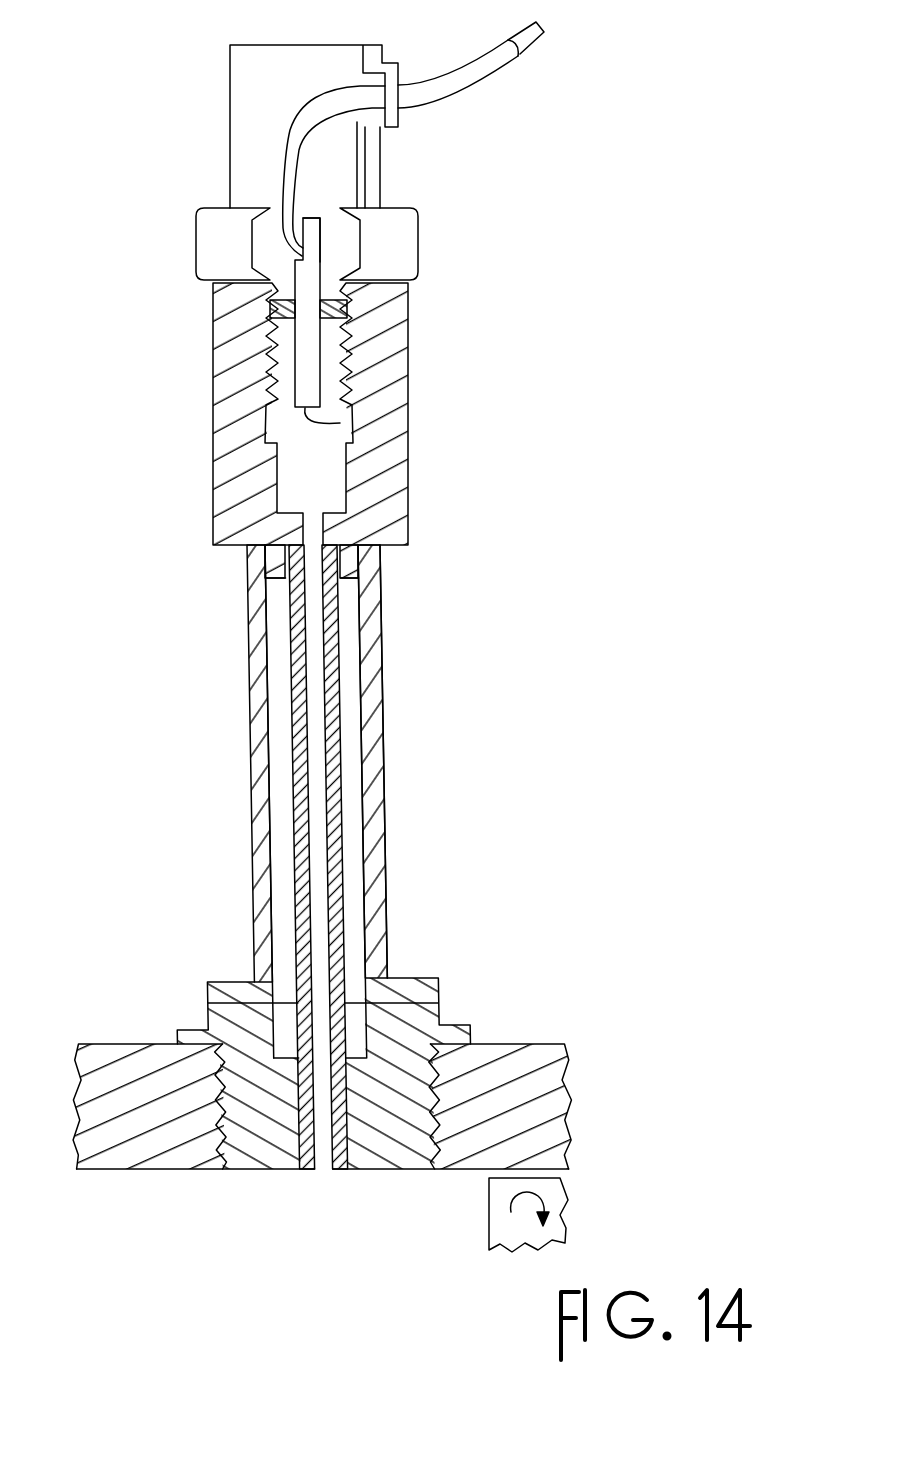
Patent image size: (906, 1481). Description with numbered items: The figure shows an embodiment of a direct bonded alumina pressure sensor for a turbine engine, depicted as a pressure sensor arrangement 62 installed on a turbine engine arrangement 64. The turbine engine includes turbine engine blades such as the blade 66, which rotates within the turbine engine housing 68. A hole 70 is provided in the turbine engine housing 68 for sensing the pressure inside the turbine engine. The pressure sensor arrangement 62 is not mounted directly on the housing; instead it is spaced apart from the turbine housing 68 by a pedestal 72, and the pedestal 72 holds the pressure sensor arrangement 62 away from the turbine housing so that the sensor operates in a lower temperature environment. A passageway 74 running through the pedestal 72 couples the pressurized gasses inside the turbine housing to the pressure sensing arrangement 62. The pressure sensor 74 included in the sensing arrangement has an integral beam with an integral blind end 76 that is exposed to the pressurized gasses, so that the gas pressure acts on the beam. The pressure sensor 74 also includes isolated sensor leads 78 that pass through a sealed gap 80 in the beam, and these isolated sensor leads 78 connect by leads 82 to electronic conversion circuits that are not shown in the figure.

The pressure sensor arrangement 62 is at (214, 179).
The turbine engine arrangement 64 is at (633, 222).
The blade 66 is at (570, 1207).
The turbine engine housing 68 is at (90, 1044).
The hole 70 is at (214, 1146).
The pedestal 72 is at (182, 639).
The pressure sensor 74 is at (291, 350).
The integral blind end 76 is at (340, 423).
The isolated sensor leads 78 is at (289, 148).
The sealed gap 80 is at (298, 247).
The leads 82 is at (458, 95).